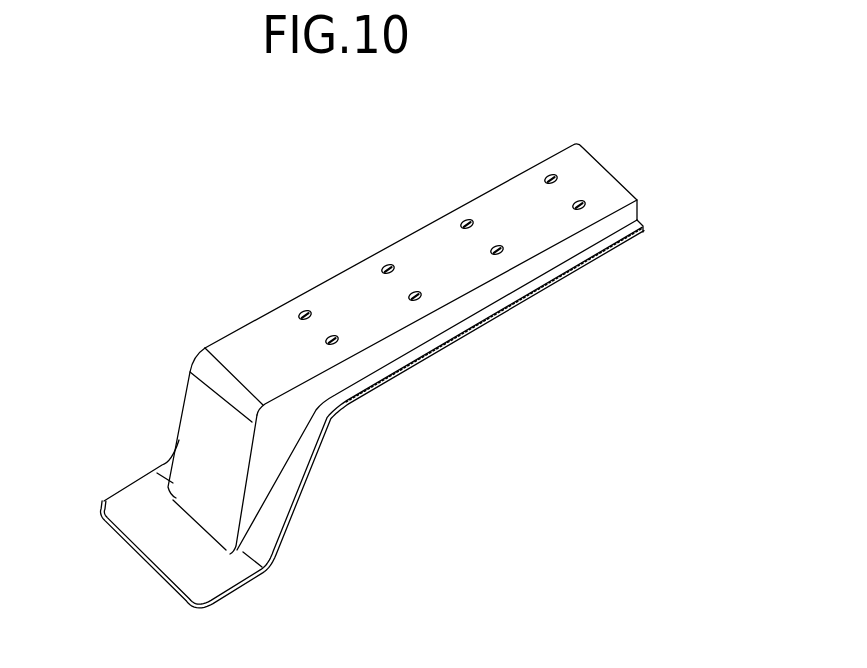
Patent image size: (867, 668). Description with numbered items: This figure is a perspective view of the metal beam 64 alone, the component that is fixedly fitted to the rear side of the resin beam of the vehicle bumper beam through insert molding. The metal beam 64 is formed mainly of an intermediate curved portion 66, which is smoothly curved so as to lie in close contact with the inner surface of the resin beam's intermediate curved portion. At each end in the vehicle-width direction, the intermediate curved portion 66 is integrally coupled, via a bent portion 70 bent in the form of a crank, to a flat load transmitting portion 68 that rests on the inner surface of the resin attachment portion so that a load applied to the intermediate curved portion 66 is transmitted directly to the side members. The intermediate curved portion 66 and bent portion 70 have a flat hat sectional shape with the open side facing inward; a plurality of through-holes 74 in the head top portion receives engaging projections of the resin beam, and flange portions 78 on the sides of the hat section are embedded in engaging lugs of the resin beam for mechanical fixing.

The metal beam 64 is at (200, 226).
The intermediate curved portion 66 is at (423, 243).
The load transmitting portion 68 is at (162, 545).
The bent portion 70 is at (192, 450).
The through-hole 74 is at (468, 222).
The flange portion 78 is at (505, 297).